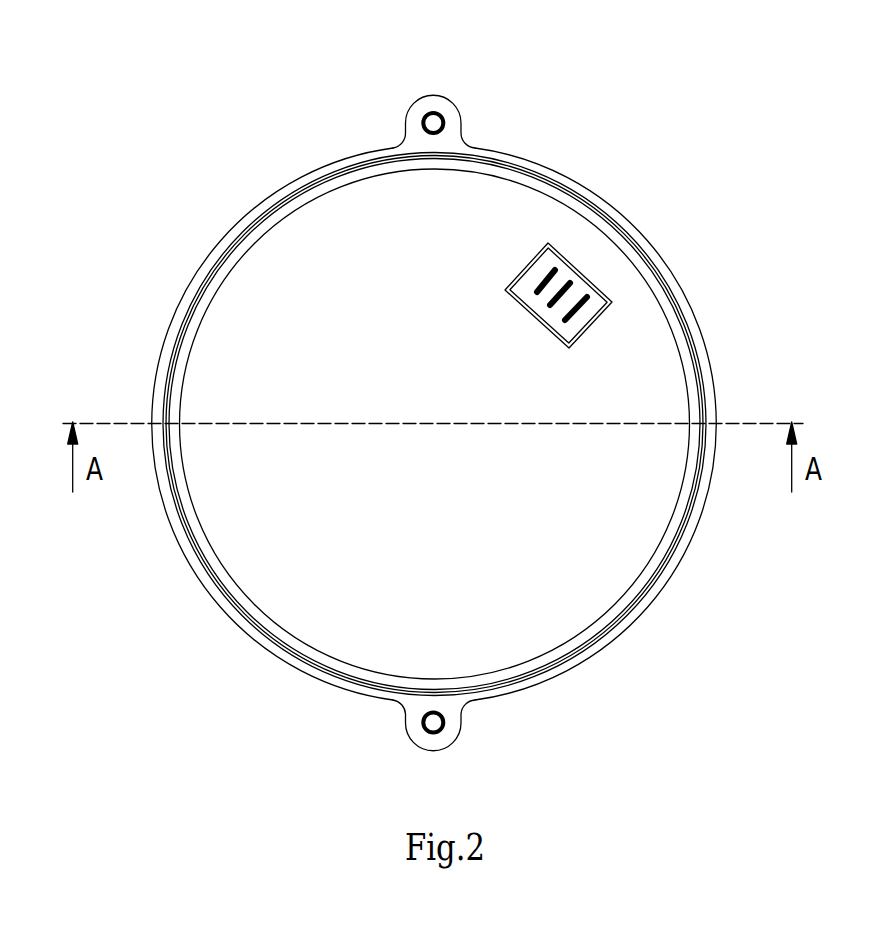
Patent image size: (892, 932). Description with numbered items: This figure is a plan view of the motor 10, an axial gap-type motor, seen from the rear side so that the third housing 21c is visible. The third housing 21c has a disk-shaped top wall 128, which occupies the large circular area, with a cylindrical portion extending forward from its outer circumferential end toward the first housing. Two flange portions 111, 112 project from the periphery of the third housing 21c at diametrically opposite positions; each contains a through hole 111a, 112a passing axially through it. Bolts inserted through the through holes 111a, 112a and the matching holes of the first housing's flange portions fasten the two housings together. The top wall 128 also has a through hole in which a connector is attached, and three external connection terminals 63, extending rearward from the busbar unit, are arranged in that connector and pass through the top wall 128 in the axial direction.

The motor 10 is at (681, 166).
The third housing 21c is at (288, 187).
The top wall 128 is at (282, 253).
The external connection terminals 63 is at (567, 271).
The flange portion 111 is at (417, 112).
The through hole 111a is at (433, 130).
The flange portion 112 is at (407, 720).
The through hole 112a is at (432, 733).